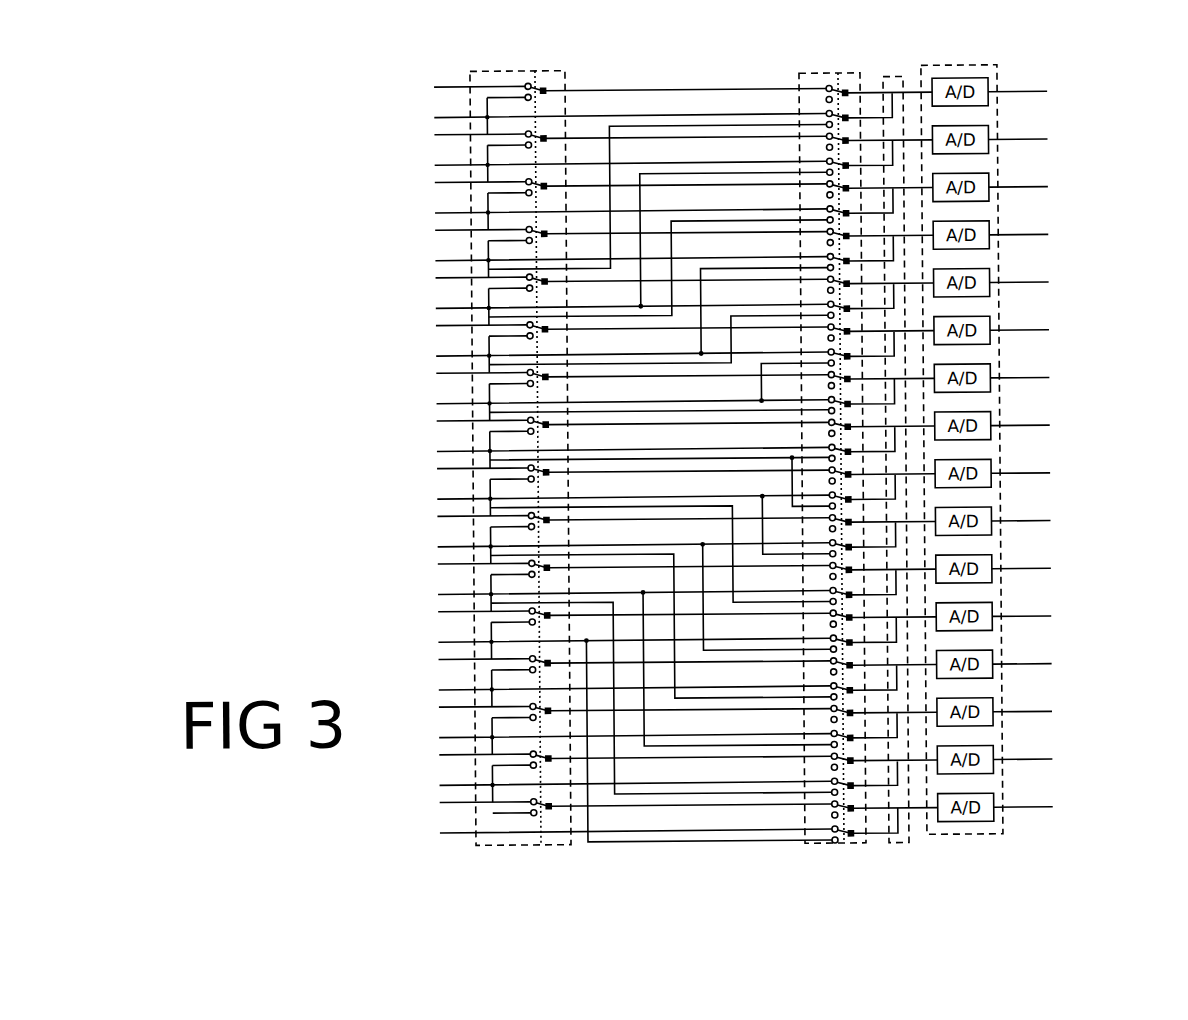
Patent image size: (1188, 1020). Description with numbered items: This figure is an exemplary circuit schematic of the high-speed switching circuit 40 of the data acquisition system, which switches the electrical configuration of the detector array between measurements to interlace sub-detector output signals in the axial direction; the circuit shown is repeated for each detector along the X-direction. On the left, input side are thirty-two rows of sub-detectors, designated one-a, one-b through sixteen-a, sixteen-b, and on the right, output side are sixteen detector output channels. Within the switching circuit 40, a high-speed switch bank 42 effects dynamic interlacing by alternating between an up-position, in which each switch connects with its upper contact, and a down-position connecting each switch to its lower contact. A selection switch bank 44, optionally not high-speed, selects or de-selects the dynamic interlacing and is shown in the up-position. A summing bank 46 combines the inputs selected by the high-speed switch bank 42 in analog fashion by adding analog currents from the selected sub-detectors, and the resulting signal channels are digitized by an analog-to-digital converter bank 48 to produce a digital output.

The high-speed switching circuit 40 is at (316, 332).
The high-speed switch bank 42 is at (496, 71).
The selection switch bank 44 is at (822, 74).
The summing bank 46 is at (884, 79).
The analog-to-digital converter bank 48 is at (968, 67).